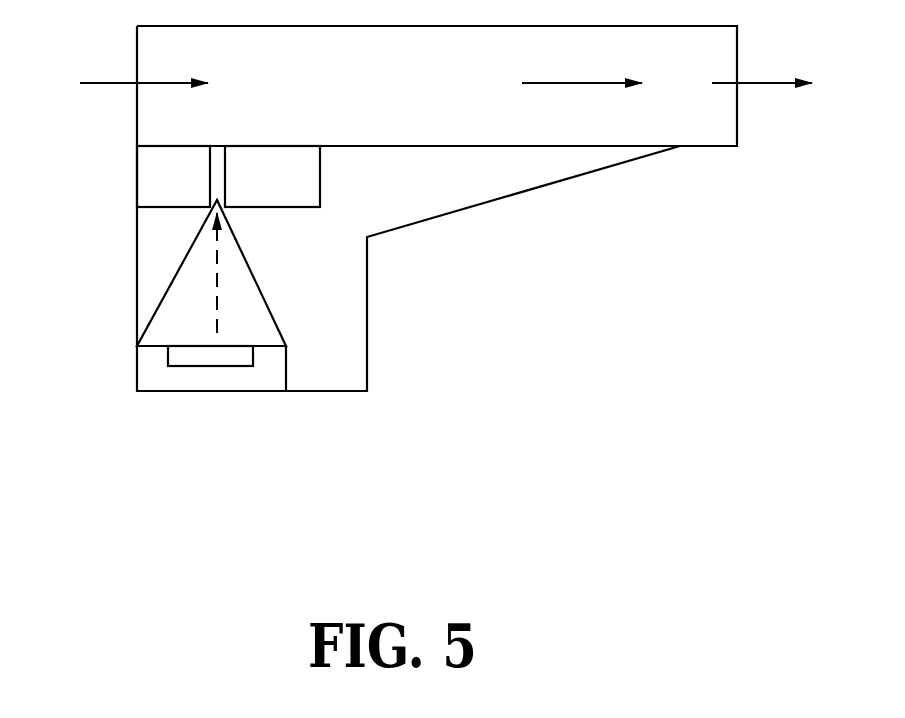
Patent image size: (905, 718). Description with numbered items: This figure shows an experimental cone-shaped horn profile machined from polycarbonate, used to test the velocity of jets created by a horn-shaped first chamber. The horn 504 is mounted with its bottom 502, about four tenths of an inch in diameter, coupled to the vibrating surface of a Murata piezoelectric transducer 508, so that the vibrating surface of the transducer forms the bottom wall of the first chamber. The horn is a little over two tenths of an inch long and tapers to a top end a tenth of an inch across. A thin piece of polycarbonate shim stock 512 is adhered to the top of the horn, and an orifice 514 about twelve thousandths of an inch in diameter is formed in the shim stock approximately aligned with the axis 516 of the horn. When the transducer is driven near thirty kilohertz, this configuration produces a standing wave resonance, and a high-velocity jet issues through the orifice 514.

The bottom 502 is at (199, 351).
The horn 504 is at (168, 290).
The piezoelectric transducer 508 is at (229, 369).
The polycarbonate shim stock 512 is at (141, 186).
The orifice 514 is at (229, 208).
The axis 516 is at (214, 323).